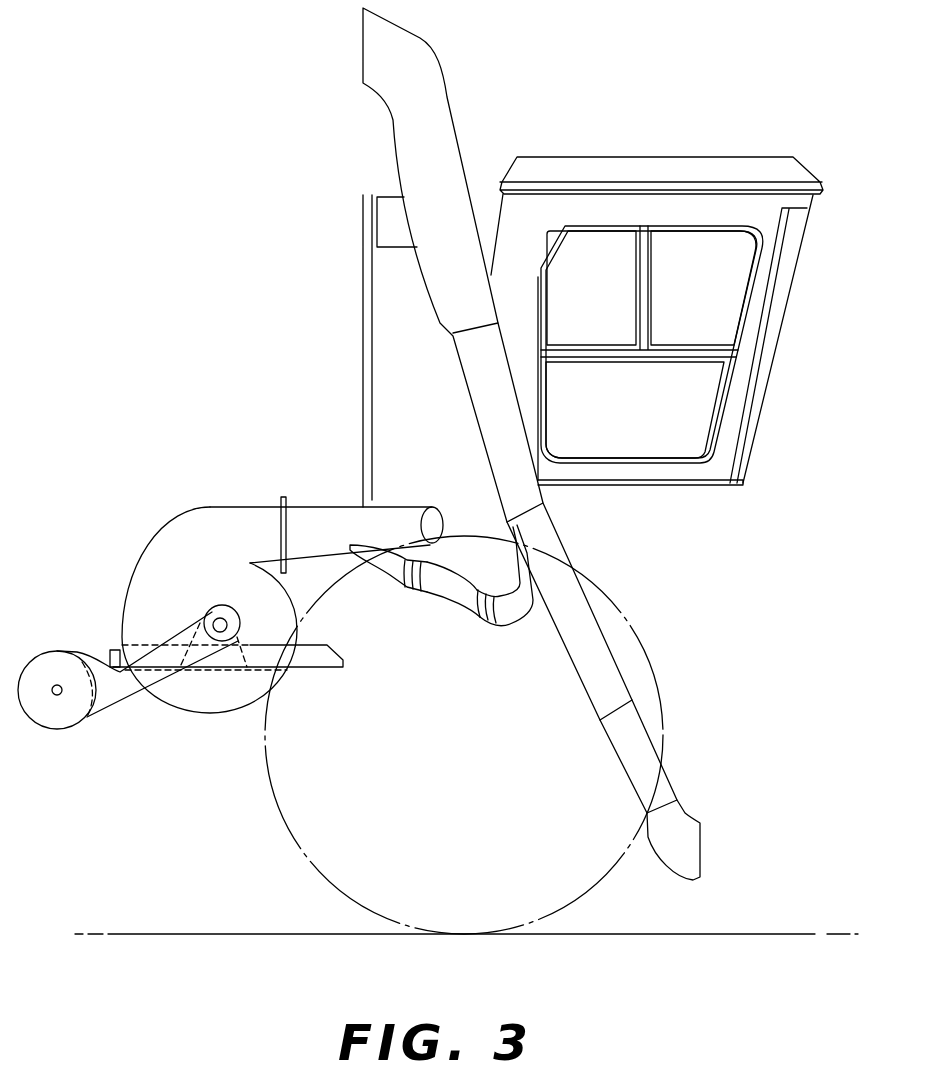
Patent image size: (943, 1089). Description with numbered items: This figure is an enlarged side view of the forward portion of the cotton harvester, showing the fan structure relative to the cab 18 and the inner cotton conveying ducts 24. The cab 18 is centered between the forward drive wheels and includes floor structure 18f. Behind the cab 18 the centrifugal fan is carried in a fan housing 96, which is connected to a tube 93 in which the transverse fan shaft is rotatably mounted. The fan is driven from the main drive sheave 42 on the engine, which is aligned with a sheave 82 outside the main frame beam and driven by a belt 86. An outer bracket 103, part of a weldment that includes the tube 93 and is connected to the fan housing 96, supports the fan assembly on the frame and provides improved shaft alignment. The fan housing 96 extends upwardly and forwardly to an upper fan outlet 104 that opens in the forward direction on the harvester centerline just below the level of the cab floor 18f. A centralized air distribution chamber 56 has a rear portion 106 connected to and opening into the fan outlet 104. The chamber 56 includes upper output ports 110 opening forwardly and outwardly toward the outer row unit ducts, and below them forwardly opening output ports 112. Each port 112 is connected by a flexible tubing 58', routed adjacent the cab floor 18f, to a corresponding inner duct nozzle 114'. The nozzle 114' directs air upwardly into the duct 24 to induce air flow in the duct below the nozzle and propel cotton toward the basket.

The cab 18 is at (777, 383).
The floor structure 18f is at (672, 487).
The cotton conveying duct 24 is at (622, 646).
The air distribution chamber 56 is at (342, 500).
The upper fan outlet 104 is at (280, 533).
The upper output port 110 is at (437, 520).
The fan housing 96 is at (165, 525).
The rear portion 106 is at (290, 557).
The tube 93 is at (220, 616).
The sheave 82 is at (203, 640).
The main drive sheave 42 is at (107, 710).
The belt 86 is at (88, 723).
The outer bracket 103 is at (243, 652).
The output port 112 is at (408, 590).
The flexible tubing 58' is at (461, 613).
The inner duct nozzle 114' is at (515, 605).